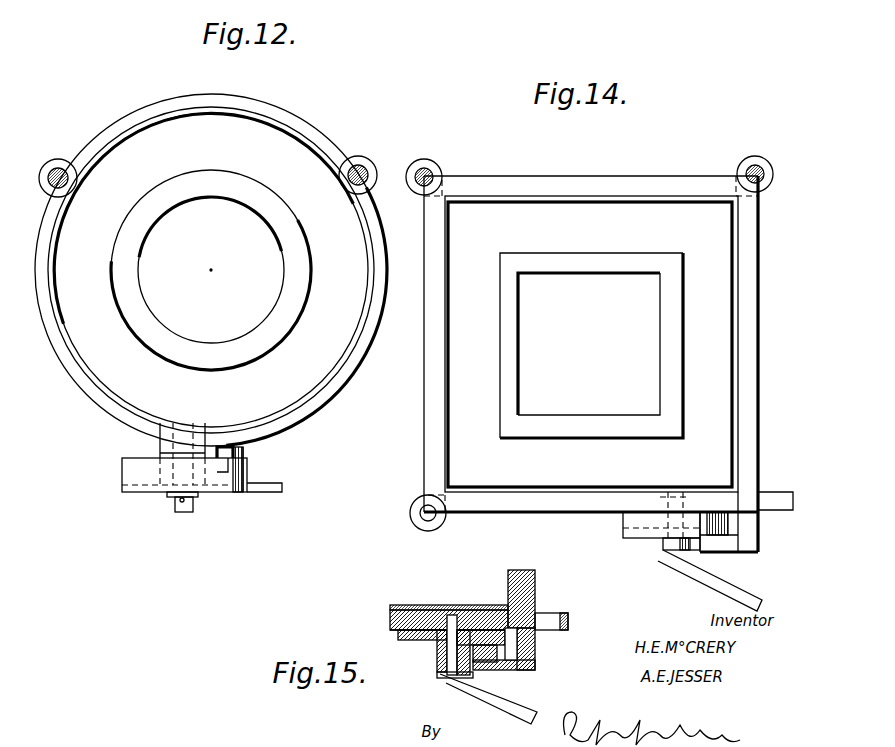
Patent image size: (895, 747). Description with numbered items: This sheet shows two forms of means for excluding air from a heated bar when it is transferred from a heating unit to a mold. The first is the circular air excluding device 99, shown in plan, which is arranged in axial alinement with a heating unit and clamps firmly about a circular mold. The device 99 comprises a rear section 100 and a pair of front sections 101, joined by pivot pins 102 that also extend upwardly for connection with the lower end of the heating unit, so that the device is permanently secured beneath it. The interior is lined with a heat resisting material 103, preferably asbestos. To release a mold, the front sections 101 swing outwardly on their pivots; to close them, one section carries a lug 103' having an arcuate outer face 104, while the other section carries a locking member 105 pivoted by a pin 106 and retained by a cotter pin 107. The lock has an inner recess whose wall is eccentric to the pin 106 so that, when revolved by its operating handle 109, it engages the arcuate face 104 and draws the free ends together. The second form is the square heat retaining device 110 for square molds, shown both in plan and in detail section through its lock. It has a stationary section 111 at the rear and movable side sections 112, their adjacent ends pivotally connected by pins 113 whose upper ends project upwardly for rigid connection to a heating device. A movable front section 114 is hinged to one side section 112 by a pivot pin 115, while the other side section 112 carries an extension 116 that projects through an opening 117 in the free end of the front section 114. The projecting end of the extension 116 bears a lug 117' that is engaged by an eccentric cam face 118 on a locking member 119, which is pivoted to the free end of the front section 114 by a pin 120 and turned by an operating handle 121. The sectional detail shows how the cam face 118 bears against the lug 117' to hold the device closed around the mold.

In FIG. 12, the air excluding device 99 is at (330, 398).
In FIG. 12, the rear section 100 is at (212, 92).
In FIG. 12, the front sections 101 is at (84, 376).
In FIG. 12, the pivot pins 102 is at (59, 168).
In FIG. 12, the heat resisting material 103 is at (211, 270).
In FIG. 14, the heat resisting material 103 is at (590, 344).
In FIG. 15, the heat resisting material 103 is at (449, 594).
In FIG. 12, the lug 103' is at (267, 467).
In FIG. 12, the arcuate outer face 104 is at (228, 452).
In FIG. 12, the locking member 105 is at (137, 475).
In FIG. 12, the pin 106 is at (182, 511).
In FIG. 12, the cotter pin 107 is at (172, 500).
In FIG. 12, the operating handle 109 is at (268, 494).
In FIG. 14, the heat retaining device 110 is at (566, 176).
In FIG. 15, the heat retaining device 110 is at (388, 613).
In FIG. 14, the stationary section 111 is at (503, 176).
In FIG. 14, the movable side sections 112 is at (758, 278).
In FIG. 14, the pins 113 is at (428, 170).
In FIG. 14, the movable front section 114 is at (549, 511).
In FIG. 15, the movable front section 114 is at (388, 622).
In FIG. 14, the pivot pin 115 is at (415, 520).
In FIG. 14, the extension 116 is at (755, 536).
In FIG. 15, the extension 116 is at (537, 656).
In FIG. 14, the opening 117 is at (775, 488).
In FIG. 15, the opening 117 is at (557, 606).
In FIG. 14, the lug 117' is at (713, 557).
In FIG. 15, the lug 117' is at (458, 694).
In FIG. 14, the eccentric cam face 118 is at (718, 510).
In FIG. 15, the eccentric cam face 118 is at (503, 672).
In FIG. 14, the locking member 119 is at (628, 520).
In FIG. 15, the locking member 119 is at (414, 642).
In FIG. 14, the pin 120 is at (681, 494).
In FIG. 15, the pin 120 is at (433, 610).
In FIG. 14, the operating handle 121 is at (718, 578).
In FIG. 15, the operating handle 121 is at (527, 722).